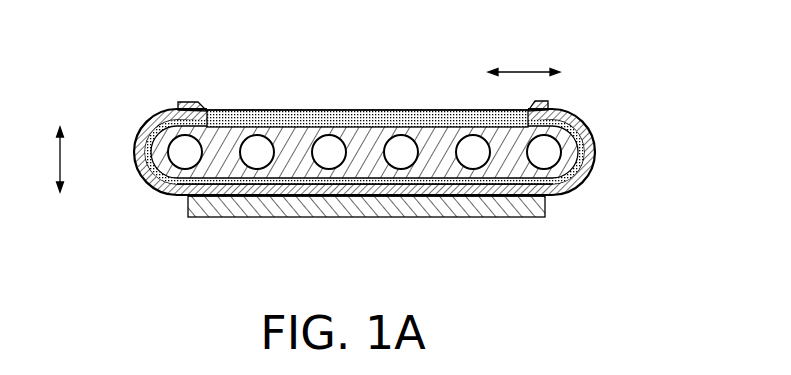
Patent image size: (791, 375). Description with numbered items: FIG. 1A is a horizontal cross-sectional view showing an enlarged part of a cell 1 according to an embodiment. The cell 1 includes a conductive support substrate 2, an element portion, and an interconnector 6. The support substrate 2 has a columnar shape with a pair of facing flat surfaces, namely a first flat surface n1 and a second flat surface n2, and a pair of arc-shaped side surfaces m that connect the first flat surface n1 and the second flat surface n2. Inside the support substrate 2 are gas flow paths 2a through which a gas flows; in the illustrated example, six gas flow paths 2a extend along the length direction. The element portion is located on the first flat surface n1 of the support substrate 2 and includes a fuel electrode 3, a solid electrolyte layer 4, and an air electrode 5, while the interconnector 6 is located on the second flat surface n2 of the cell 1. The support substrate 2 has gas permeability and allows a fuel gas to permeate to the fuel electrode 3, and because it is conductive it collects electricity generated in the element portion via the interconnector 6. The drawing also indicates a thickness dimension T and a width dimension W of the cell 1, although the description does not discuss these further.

The cell 1 is at (600, 40).
The support substrate 2 is at (284, 167).
The gas flow paths 2a is at (329, 141).
The fuel electrode 3 is at (522, 217).
The solid electrolyte layer 4 is at (480, 217).
The air electrode 5 is at (428, 202).
The interconnector 6 is at (373, 117).
The first flat surface n1 is at (362, 185).
The second flat surface n2 is at (418, 119).
The arc-shaped side surfaces m is at (136, 148).
The thickness dimension T is at (50, 159).
The width dimension W is at (524, 61).